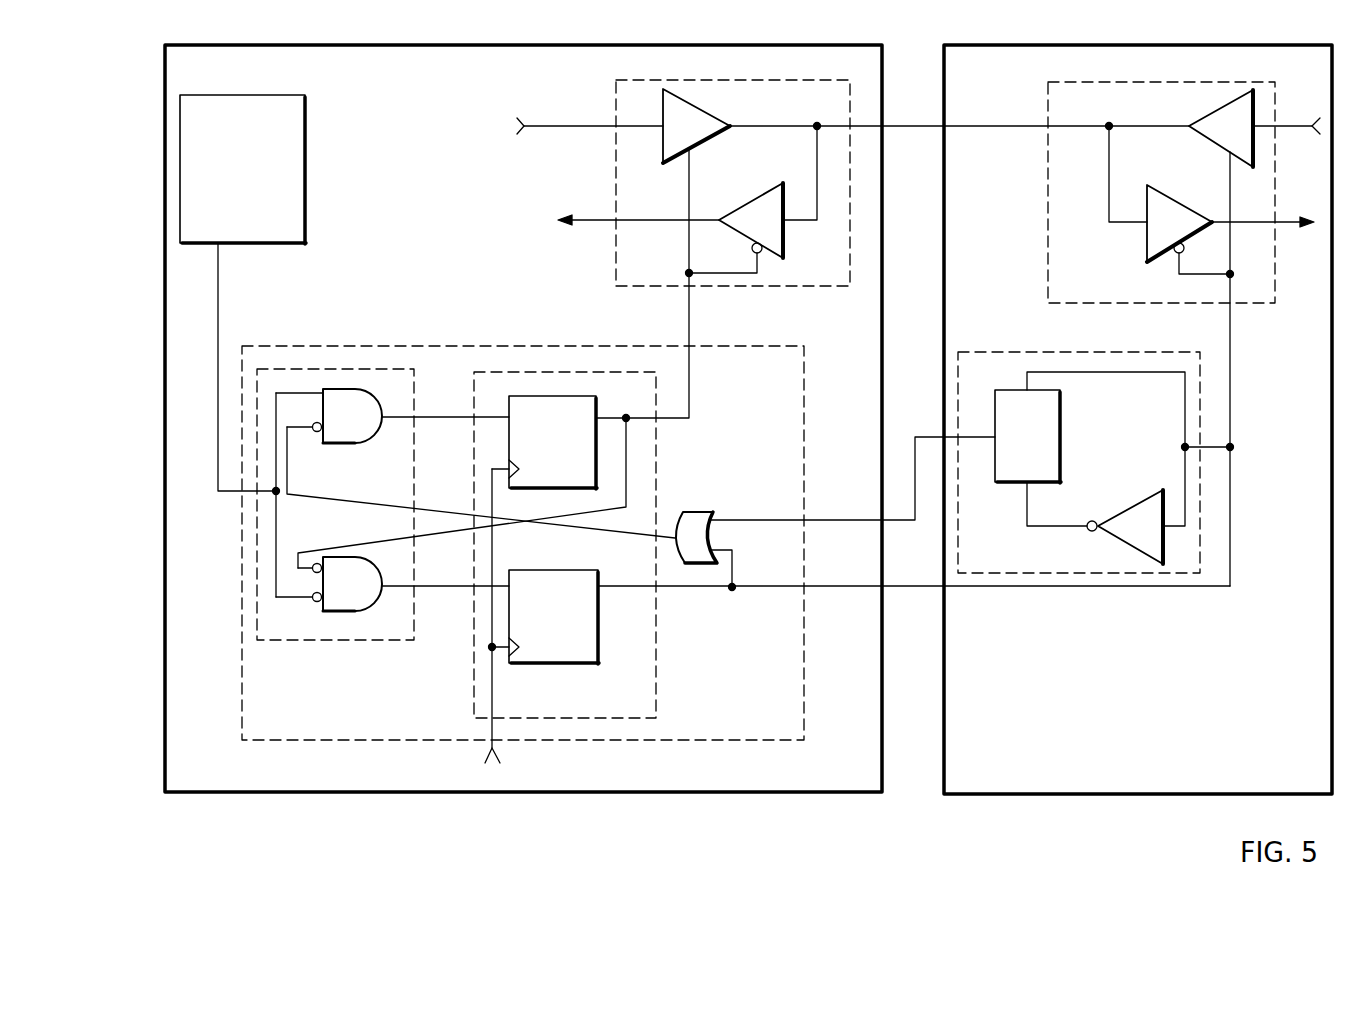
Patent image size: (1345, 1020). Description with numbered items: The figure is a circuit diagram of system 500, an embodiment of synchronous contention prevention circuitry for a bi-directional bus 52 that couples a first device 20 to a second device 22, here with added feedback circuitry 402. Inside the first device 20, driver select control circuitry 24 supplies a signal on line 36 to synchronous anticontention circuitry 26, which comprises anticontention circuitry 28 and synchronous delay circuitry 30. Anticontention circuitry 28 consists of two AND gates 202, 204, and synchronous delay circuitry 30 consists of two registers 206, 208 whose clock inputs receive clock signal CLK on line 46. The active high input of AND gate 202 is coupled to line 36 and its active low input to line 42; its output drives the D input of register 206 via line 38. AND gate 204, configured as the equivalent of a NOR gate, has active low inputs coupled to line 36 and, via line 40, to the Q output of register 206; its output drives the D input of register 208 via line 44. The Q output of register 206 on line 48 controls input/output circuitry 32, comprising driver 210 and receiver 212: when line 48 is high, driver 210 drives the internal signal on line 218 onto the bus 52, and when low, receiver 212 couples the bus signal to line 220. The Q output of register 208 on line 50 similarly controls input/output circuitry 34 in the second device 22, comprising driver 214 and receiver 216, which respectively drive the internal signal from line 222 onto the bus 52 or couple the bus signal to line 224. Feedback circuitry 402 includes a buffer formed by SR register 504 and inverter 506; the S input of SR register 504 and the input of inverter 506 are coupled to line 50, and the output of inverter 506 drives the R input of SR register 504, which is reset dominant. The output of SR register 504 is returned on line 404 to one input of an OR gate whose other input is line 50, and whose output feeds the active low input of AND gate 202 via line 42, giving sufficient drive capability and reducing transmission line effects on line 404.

The first device 20 is at (184, 784).
The second device 22 is at (972, 756).
The driver select control circuitry 24 is at (229, 233).
The synchronous anticontention circuitry 26 is at (262, 731).
The anticontention circuitry 28 is at (382, 634).
The synchronous delay circuitry 30 is at (617, 708).
The input/output circuitry 32 is at (627, 279).
The input/output circuitry 34 is at (1059, 294).
The line 36 is at (218, 348).
The line 38 is at (428, 417).
The line 40 is at (428, 536).
The line 42 is at (432, 510).
The line 44 is at (422, 588).
The line 46 is at (500, 748).
The line 48 is at (689, 408).
The line 50 is at (818, 586).
The bi-directional bus 52 is at (905, 126).
The AND gate 202 is at (332, 427).
The AND gate 204 is at (332, 597).
The register 206 is at (533, 456).
The register 208 is at (534, 630).
The driver 210 is at (669, 137).
The receiver 212 is at (738, 230).
The driver 214 is at (1211, 137).
The receiver 216 is at (1151, 230).
The line 218 is at (570, 128).
The line 220 is at (580, 226).
The line 222 is at (1290, 126).
The line 224 is at (1290, 222).
The feedback circuitry 402 is at (966, 569).
The line 404 is at (915, 437).
The system 500 is at (928, 800).
The SR register 504 is at (1008, 451).
The inverter 506 is at (1116, 537).